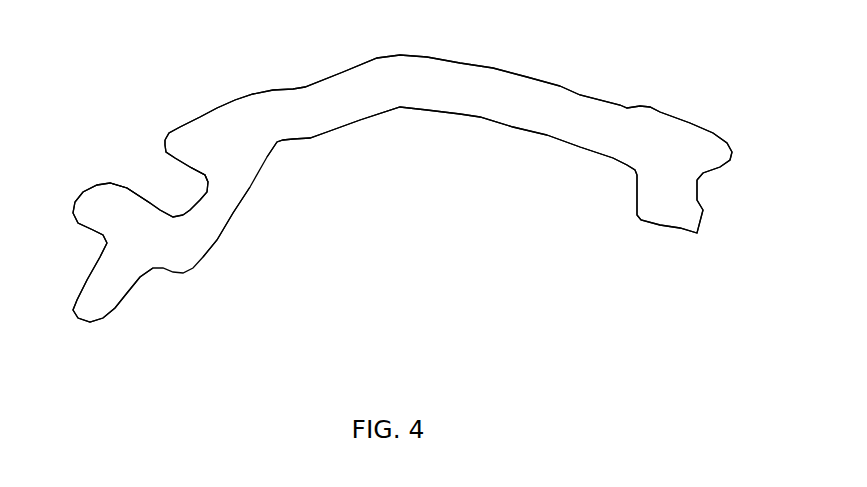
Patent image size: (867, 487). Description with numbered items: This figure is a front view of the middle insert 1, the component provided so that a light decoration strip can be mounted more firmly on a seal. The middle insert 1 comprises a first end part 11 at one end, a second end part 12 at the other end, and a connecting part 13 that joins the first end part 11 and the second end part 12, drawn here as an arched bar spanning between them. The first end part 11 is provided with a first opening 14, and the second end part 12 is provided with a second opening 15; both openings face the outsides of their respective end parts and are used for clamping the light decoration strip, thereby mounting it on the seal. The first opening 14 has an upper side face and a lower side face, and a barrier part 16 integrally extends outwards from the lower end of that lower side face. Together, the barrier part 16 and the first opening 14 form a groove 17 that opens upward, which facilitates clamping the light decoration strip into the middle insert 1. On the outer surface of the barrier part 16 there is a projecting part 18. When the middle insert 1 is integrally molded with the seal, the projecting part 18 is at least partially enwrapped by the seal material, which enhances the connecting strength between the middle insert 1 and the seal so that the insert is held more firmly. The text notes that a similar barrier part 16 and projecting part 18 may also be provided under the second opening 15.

The middle insert 1 is at (502, 253).
The first end part 11 is at (223, 142).
The second end part 12 is at (682, 155).
The connecting part 13 is at (419, 92).
The first opening 14 is at (205, 185).
The second opening 15 is at (707, 190).
The barrier part 16 is at (97, 203).
The groove 17 is at (138, 175).
The projecting part 18 is at (105, 293).